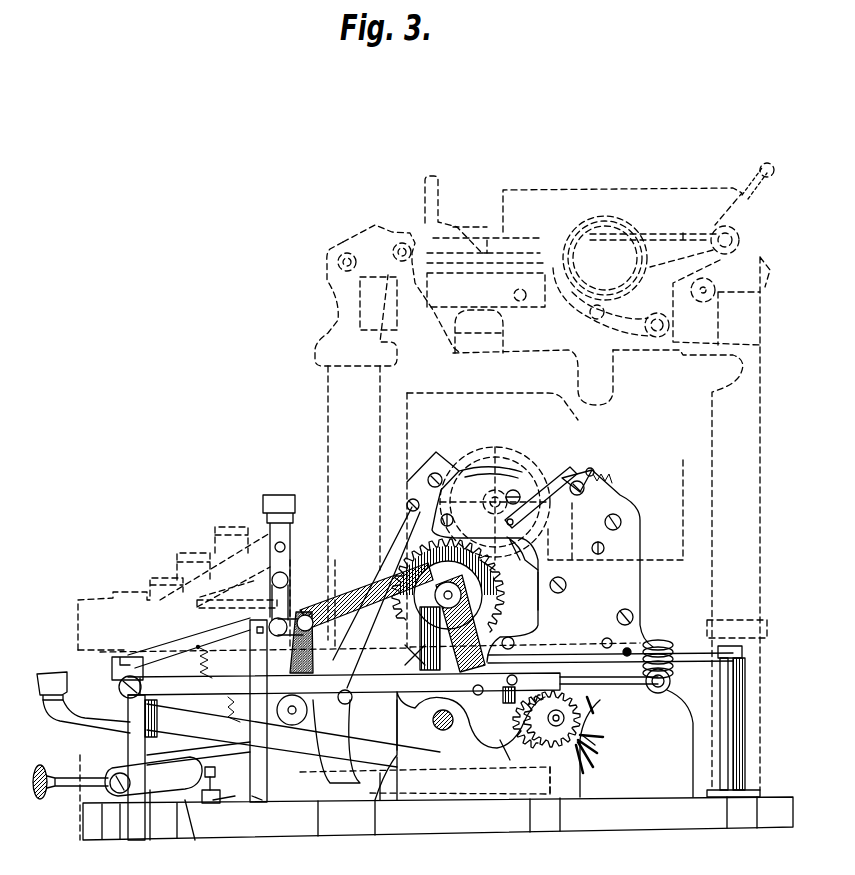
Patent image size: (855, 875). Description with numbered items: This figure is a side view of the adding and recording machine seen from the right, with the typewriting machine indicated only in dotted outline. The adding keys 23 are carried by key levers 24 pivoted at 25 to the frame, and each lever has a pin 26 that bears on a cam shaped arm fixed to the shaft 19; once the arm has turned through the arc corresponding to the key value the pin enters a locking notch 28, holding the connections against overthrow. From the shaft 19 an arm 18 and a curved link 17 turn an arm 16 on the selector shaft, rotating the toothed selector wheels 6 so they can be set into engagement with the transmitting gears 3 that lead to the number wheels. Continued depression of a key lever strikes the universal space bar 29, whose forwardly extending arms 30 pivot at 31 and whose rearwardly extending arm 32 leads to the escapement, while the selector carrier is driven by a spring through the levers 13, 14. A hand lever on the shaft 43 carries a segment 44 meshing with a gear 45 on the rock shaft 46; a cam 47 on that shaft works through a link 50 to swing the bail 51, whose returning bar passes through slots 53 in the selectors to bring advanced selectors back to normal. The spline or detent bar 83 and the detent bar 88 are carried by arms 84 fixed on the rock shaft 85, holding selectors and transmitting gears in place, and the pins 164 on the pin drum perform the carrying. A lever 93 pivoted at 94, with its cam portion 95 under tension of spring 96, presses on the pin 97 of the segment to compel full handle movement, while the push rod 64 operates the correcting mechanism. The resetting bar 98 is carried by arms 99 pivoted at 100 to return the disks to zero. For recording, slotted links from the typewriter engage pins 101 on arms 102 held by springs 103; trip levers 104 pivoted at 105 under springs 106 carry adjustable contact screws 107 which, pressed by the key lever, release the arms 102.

The transmitting gears 3 is at (480, 560).
The selector wheels 6 is at (425, 560).
The lever 13 is at (632, 690).
The lever 14 is at (558, 660).
The arm 16 is at (495, 590).
The curved link 17 is at (352, 600).
The arm 18 is at (318, 618).
The shaft 19 is at (300, 714).
The adding keys 23 is at (50, 673).
The key levers 24 is at (217, 723).
The pivot 25 is at (545, 798).
The pin 26 is at (330, 740).
The locking notch 28 is at (263, 780).
The universal space bar 29 is at (187, 802).
The forwardly extending arms 30 is at (173, 777).
The pivot 31 is at (120, 793).
The rearwardly extending arm 32 is at (219, 783).
The shaft 43 is at (440, 732).
The segment 44 is at (493, 760).
The gear 45 is at (573, 735).
The rock shaft 46 is at (552, 719).
The cam 47 is at (587, 660).
The link 50 is at (460, 738).
The bail 51 is at (408, 658).
The slots 53 is at (490, 605).
The push rod 64 is at (95, 778).
The spline or detent bar 83 is at (330, 618).
The arms 84 is at (400, 560).
The rock shaft 85 is at (347, 690).
The detent bar 88 is at (407, 503).
The lever 93 is at (408, 725).
The pivot 94 is at (122, 694).
The cam portion 95 is at (479, 702).
The spring 96 is at (502, 745).
The pin 97 is at (502, 686).
The resetting bar 98 is at (570, 468).
The arms 99 is at (548, 480).
The pivot 100 is at (245, 575).
The pins 101 is at (268, 624).
The levers or arms 102 is at (200, 640).
The springs 103 is at (214, 652).
The trip levers 104 is at (260, 652).
The pivot 105 is at (262, 798).
The springs 106 is at (233, 803).
The adjustable contact screws 107 is at (190, 783).
The pins 164 is at (600, 740).